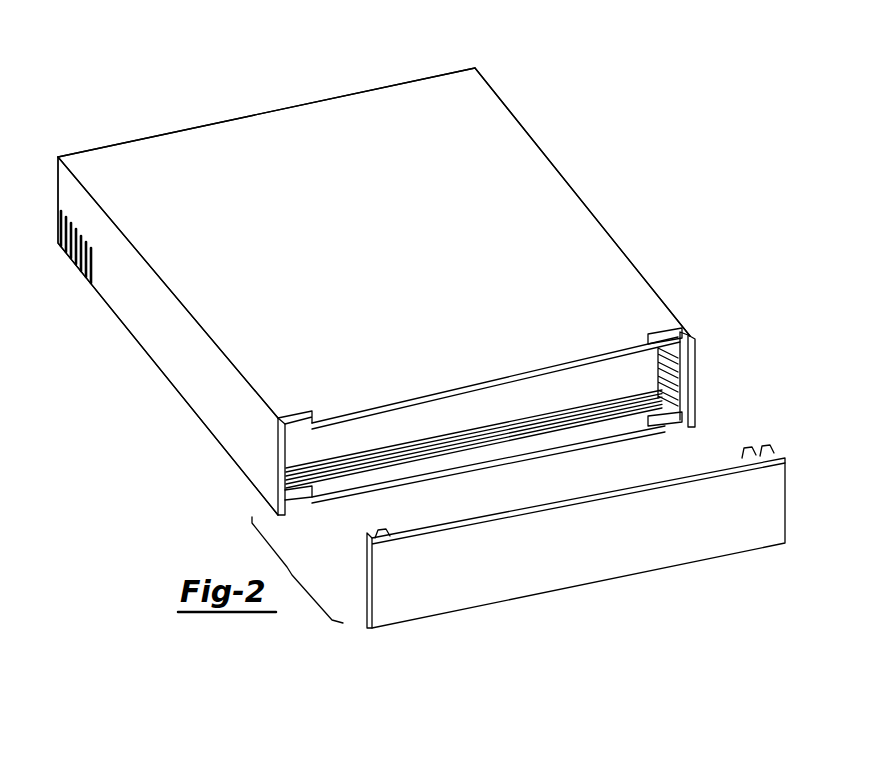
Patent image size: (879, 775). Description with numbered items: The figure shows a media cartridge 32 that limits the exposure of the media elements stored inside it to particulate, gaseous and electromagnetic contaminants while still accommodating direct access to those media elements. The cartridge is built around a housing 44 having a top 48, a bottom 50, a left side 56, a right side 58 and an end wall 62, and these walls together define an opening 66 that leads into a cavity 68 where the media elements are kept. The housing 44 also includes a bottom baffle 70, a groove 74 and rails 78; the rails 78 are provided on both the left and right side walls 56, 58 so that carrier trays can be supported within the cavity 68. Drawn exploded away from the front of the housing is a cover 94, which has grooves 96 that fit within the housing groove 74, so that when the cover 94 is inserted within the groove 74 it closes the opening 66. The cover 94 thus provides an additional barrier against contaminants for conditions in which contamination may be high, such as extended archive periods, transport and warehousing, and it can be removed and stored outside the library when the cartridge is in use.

The media cartridge 32 is at (612, 176).
The housing 44 is at (176, 149).
The top 48 is at (338, 278).
The bottom 50 is at (190, 406).
The left side 56 is at (150, 318).
The right side 58 is at (634, 265).
The end wall 62 is at (237, 119).
The opening 66 is at (446, 427).
The cavity 68 is at (340, 437).
The bottom baffle 70 is at (567, 440).
The groove 74 is at (297, 412).
The rails 78 is at (651, 380).
The cover 94 is at (684, 549).
The grooves 96 is at (392, 536).